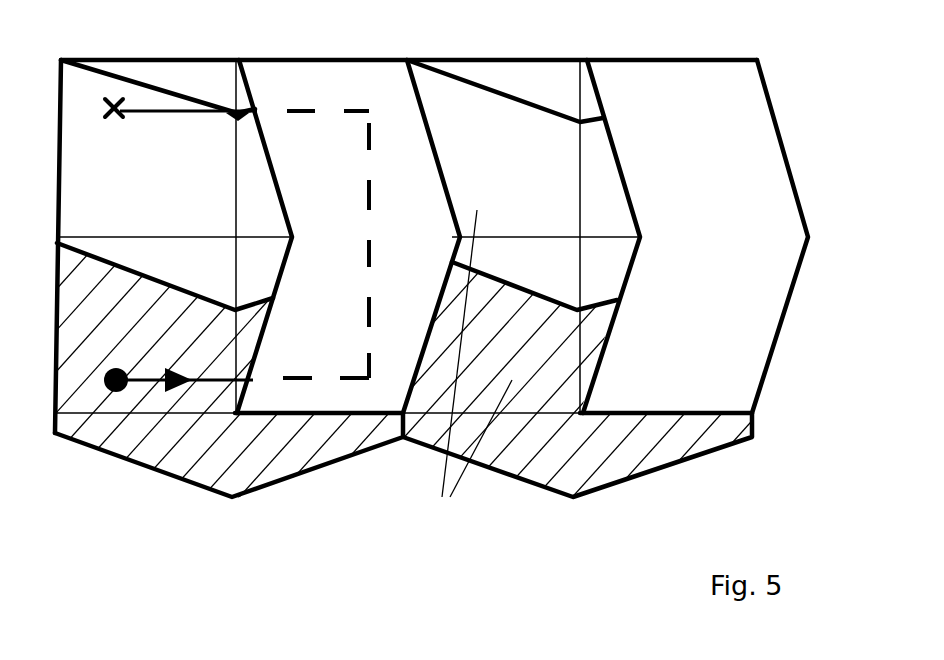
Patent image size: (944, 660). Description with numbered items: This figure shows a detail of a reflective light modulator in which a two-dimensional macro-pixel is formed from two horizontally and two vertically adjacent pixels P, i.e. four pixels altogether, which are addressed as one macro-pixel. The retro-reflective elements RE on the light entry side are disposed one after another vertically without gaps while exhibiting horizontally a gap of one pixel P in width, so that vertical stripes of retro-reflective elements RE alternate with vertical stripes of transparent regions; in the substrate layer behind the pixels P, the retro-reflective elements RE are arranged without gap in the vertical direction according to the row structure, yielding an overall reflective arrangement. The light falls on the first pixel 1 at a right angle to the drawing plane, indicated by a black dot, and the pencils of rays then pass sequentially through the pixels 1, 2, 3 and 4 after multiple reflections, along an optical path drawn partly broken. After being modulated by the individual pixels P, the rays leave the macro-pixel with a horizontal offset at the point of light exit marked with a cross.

The first pixel 1 is at (472, 330).
The second pixel 2 is at (337, 276).
The third pixel 3 is at (438, 236).
The fourth pixel 4 is at (332, 126).
The pixel P is at (471, 370).
The retro-reflective element RE is at (733, 158).